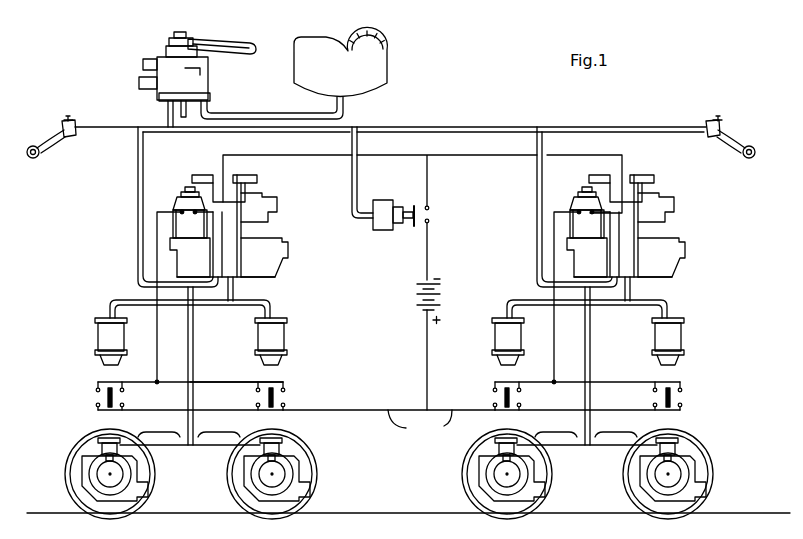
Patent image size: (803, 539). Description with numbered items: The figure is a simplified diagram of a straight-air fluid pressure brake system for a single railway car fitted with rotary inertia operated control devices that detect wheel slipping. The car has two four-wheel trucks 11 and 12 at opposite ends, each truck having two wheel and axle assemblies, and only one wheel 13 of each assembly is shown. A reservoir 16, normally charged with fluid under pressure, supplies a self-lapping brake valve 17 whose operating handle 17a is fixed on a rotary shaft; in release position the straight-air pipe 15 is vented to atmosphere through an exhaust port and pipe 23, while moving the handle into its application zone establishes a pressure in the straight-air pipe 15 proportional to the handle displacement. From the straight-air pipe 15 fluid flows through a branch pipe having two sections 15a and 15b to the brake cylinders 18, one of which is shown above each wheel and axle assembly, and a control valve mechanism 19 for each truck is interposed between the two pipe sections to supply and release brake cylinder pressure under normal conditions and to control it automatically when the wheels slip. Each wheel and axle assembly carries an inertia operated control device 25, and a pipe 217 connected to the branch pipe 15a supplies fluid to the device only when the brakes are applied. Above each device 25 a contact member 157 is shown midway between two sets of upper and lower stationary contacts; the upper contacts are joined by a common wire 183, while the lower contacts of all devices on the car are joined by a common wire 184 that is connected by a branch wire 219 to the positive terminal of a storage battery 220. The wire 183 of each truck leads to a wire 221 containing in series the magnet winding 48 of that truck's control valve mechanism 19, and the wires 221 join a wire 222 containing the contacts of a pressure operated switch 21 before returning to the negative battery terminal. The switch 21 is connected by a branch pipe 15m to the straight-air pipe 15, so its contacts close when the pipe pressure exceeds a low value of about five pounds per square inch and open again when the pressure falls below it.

The wheel truck 11 is at (190, 431).
The wheel truck 12 is at (587, 431).
The wheel 13 is at (78, 492).
The straight-air pipe 15 is at (481, 128).
The branch pipe section 15a is at (138, 152).
The branch pipe section 15b is at (236, 292).
The branch pipe 15m is at (352, 145).
The reservoir 16 is at (380, 63).
The brake valve 17 is at (213, 81).
The operating handle 17a is at (240, 42).
The brake cylinder 18 is at (94, 343).
The control valve mechanism 19 is at (198, 173).
The pressure operated switch 21 is at (381, 198).
The exhaust port and pipe 23 is at (179, 112).
The inertia operated control device 25 is at (99, 451).
The magnet winding 48 is at (182, 203).
The contact member 157 is at (106, 396).
The wire 183 is at (241, 369).
The wire 184 is at (389, 423).
The pipe 217 is at (195, 340).
The branch wire 219 is at (425, 350).
The storage battery 220 is at (414, 300).
The wire 221 is at (276, 153).
The wire 222 is at (430, 182).